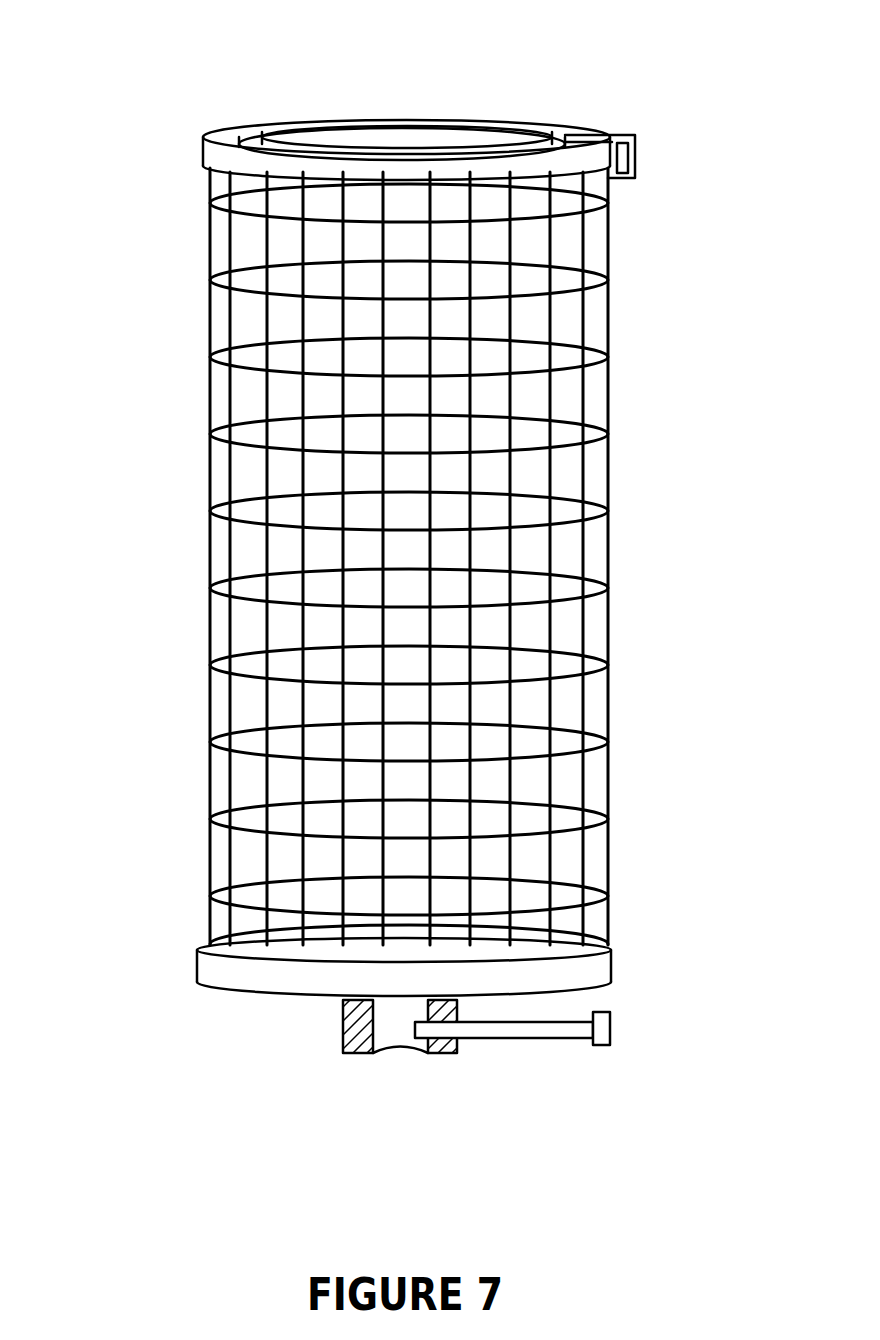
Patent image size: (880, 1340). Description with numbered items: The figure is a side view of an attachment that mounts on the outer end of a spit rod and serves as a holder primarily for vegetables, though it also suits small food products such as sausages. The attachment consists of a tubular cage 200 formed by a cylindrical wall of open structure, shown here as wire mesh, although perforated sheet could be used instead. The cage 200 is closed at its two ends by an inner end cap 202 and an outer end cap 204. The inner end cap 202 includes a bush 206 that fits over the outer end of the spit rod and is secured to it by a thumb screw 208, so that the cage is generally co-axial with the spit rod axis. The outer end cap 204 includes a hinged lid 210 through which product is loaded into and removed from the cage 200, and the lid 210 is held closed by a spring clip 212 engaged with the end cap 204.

The tubular cage 200 is at (210, 478).
The inner end cap 202 is at (610, 958).
The outer end cap 204 is at (205, 134).
The bush 206 is at (443, 1055).
The thumb screw 208 is at (565, 1030).
The hinged lid 210 is at (403, 133).
The spring clip 212 is at (632, 134).